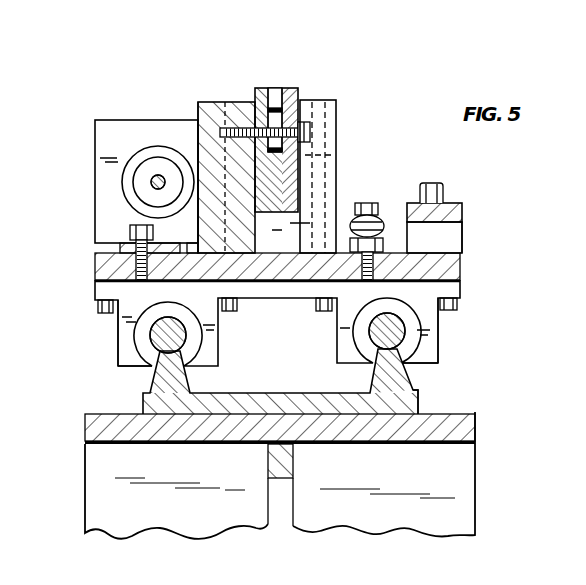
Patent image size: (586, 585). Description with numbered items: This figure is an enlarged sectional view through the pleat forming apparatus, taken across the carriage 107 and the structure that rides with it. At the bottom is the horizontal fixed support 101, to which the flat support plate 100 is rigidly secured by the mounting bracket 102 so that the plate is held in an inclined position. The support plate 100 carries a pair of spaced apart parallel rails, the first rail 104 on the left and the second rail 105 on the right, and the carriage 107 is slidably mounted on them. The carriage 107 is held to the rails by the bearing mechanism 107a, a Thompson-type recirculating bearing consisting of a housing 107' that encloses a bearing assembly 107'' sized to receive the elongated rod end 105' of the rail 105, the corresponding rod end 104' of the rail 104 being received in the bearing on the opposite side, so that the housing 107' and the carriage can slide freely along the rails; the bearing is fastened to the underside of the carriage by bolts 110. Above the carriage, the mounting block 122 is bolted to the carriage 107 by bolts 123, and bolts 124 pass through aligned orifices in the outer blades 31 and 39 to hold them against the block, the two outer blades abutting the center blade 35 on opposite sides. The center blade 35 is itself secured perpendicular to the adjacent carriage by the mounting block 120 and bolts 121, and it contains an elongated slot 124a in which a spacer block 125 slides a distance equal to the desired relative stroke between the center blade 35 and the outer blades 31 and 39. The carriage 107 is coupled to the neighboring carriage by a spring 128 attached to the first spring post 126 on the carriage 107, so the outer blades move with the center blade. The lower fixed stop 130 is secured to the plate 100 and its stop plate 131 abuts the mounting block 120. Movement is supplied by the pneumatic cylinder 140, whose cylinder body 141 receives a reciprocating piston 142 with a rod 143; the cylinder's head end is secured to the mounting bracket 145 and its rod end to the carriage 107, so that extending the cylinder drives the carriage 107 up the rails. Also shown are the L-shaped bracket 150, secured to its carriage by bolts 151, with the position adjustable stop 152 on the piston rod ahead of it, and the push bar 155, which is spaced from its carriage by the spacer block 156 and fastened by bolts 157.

The outer pleat forming blade 31 is at (298, 90).
The center pleat forming blade 35 is at (278, 97).
The outer pleat forming blade 39 is at (264, 112).
The support plate 100 is at (421, 398).
The horizontal fixed support 101 is at (477, 467).
The mounting bracket 102 is at (282, 508).
The first rail 104 is at (359, 371).
The ball of stud 104' is at (437, 331).
The second rail 105 is at (203, 362).
The elongated rod end of rail 105' is at (115, 337).
The carriage 107 is at (311, 266).
The bearing housing 107' is at (240, 323).
The bearing assembly 107'' is at (289, 374).
The bearing mechanism 107a is at (118, 360).
The bolts 110 is at (97, 305).
The mounting block 120 is at (338, 157).
The bolts 121 is at (333, 108).
The mounting block 122 is at (200, 133).
The bolts 123 is at (192, 108).
The bolts 124 is at (311, 133).
The elongated slot 124a is at (287, 93).
The spacer block 125 is at (267, 117).
The first spring post 126 is at (382, 195).
The spring 128 is at (434, 237).
The lower fixed stop 130 is at (280, 393).
The stop plate 131 is at (280, 381).
The pneumatic cylinder 140 is at (118, 185).
The cylinder body 141 is at (123, 172).
The reciprocating piston 142 is at (150, 187).
The piston rod 143 is at (152, 180).
The mounting bracket 145 is at (114, 120).
The L-shaped bracket 150 is at (118, 250).
The bolts 151 is at (153, 232).
The position adjustable stop 152 is at (148, 197).
The push bar 155 is at (463, 206).
The spacer block 156 is at (463, 233).
The bolts 157 is at (446, 188).